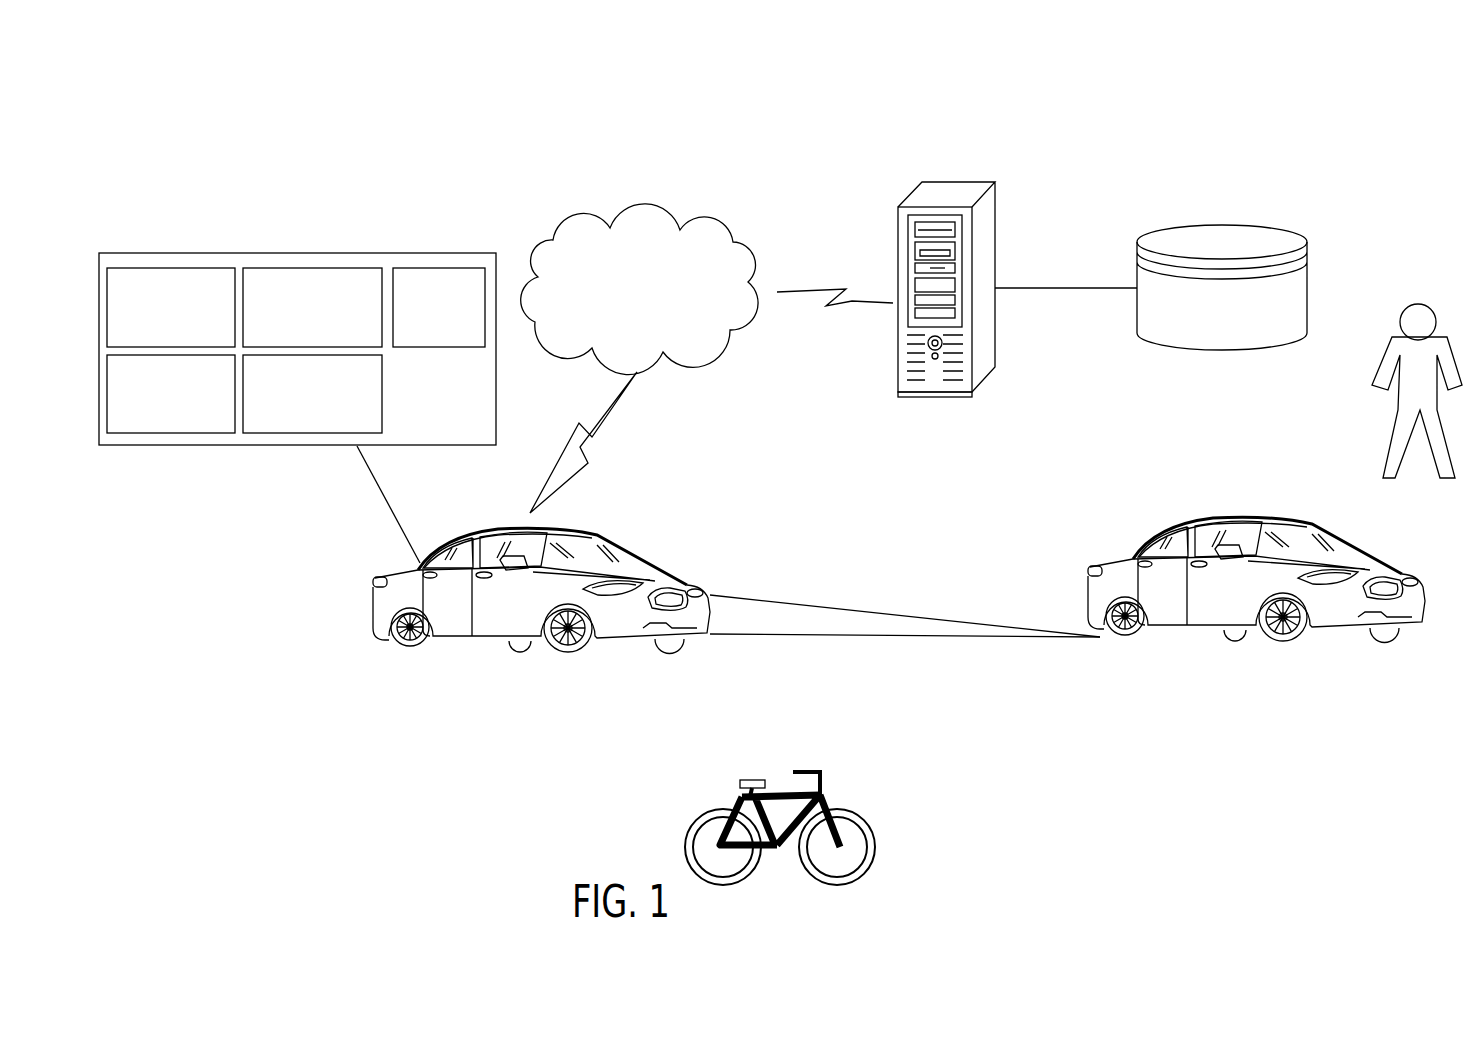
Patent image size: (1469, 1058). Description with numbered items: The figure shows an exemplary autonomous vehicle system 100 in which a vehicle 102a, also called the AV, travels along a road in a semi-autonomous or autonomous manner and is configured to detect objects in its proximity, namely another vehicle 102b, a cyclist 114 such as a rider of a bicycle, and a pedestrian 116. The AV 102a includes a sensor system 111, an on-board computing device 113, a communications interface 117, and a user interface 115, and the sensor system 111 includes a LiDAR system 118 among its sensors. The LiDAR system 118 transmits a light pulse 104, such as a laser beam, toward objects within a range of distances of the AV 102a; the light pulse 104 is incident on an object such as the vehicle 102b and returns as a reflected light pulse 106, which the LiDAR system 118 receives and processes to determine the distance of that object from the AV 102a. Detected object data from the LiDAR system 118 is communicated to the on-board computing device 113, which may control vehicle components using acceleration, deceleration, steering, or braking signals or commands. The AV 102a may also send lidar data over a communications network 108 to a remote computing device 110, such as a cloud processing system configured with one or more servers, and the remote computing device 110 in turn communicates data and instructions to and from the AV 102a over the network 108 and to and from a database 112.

The autonomous vehicle system 100 is at (315, 177).
The vehicle 102a is at (475, 638).
The vehicle 102b is at (1197, 633).
The light pulse 104 is at (943, 621).
The reflected light pulse 106 is at (967, 637).
The communications network 108 is at (645, 207).
The remote computing device 110 is at (947, 190).
The sensor system 111 is at (185, 267).
The database 112 is at (1218, 232).
The on-board computing device 113 is at (200, 434).
The cyclist 114 is at (877, 843).
The user interface 115 is at (350, 434).
The pedestrian 116 is at (1418, 302).
The communications interface 117 is at (335, 267).
The LiDAR system 118 is at (485, 267).